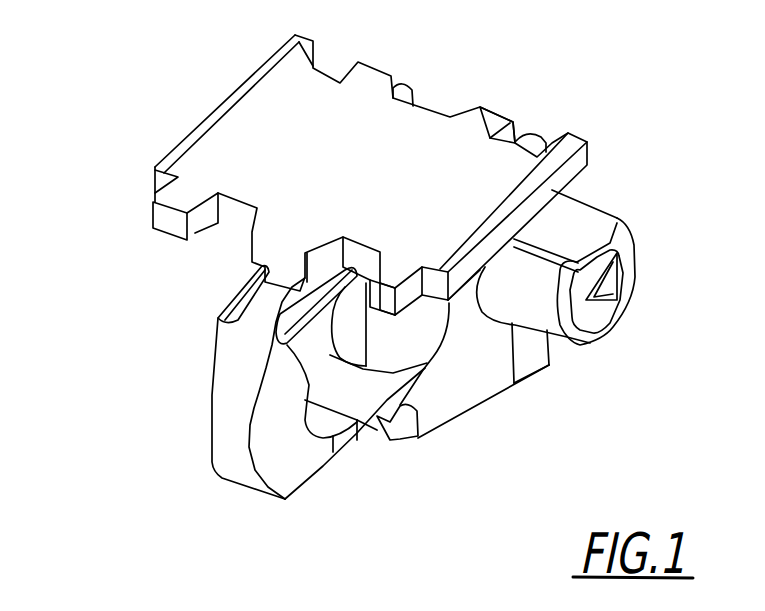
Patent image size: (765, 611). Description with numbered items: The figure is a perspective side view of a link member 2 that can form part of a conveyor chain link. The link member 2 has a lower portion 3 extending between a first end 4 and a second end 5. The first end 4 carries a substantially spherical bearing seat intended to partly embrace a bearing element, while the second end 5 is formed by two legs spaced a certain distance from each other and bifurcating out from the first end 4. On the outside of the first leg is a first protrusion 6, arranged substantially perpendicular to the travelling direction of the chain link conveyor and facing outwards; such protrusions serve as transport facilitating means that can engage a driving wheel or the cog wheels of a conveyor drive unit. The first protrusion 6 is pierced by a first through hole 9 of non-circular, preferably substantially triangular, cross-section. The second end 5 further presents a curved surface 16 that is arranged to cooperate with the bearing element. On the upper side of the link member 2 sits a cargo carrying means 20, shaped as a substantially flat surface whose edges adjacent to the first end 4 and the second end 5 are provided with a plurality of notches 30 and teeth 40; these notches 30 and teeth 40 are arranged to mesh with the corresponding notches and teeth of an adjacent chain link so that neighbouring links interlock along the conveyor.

The link member 2 is at (190, 83).
The cargo carrying means 20 is at (275, 102).
The notches 30 is at (438, 285).
The teeth 40 is at (490, 125).
The first end 4 is at (228, 428).
The lower portion 3 is at (473, 350).
The second end 5 is at (527, 357).
The first protrusion 6 is at (583, 220).
The first through hole 9 is at (617, 305).
The curved surface 16 is at (418, 337).